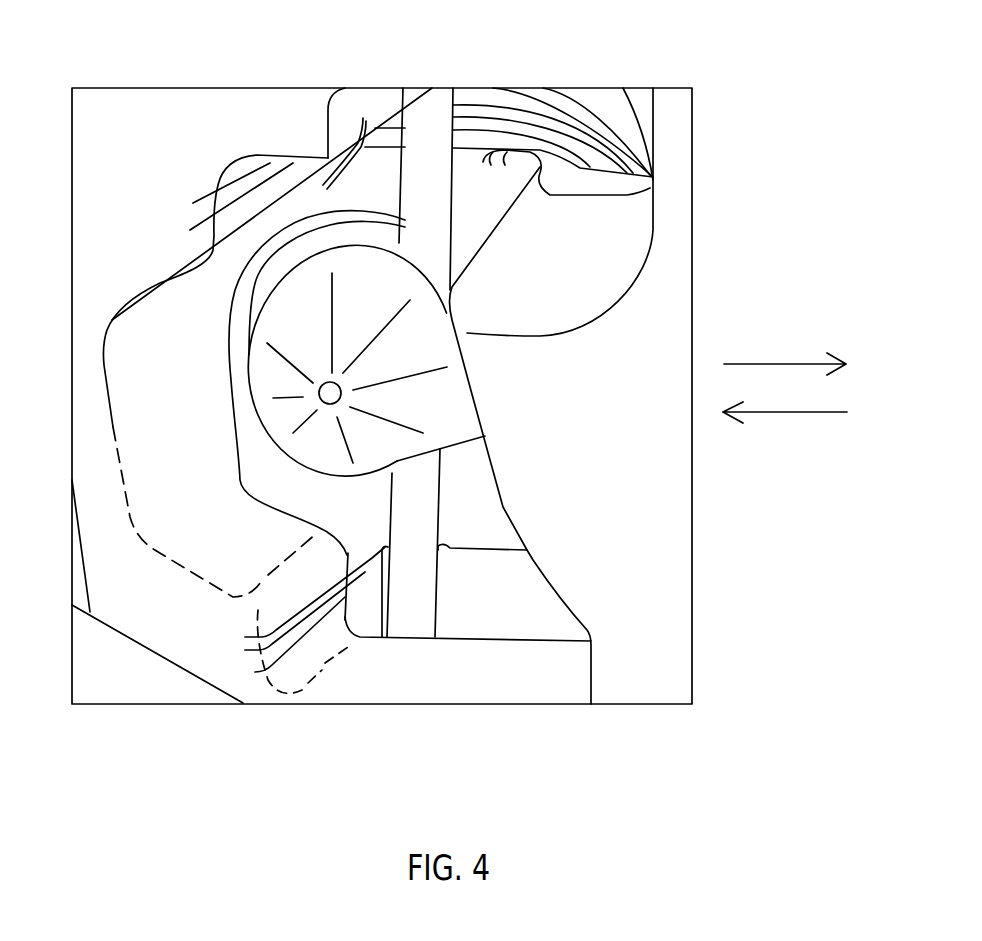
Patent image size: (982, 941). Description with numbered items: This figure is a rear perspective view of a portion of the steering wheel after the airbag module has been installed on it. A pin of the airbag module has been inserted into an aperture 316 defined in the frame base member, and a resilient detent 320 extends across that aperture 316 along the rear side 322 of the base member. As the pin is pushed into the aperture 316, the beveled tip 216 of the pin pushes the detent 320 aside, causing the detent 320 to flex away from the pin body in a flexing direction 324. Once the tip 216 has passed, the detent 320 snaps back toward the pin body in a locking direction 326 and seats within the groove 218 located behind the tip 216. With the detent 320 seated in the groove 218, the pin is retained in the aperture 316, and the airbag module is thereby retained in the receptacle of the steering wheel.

The beveled tip 216 is at (293, 337).
The groove 218 is at (303, 257).
The aperture 316 is at (342, 212).
The resilient detent 320 is at (405, 170).
The rear side 322 is at (493, 183).
The flexing direction 324 is at (777, 364).
The locking direction 326 is at (780, 412).